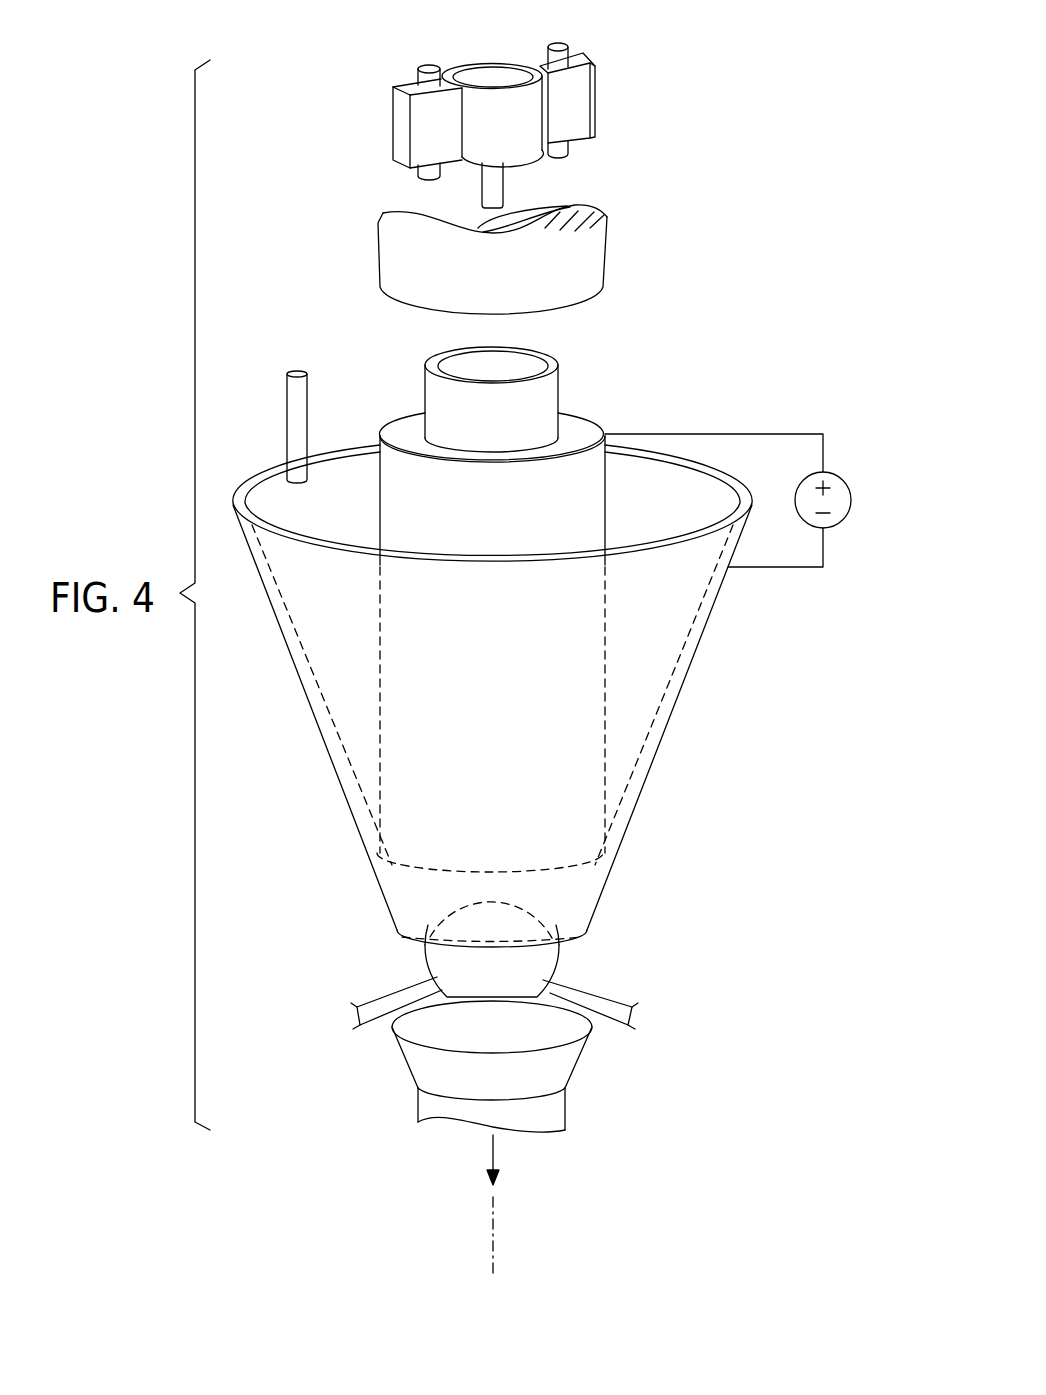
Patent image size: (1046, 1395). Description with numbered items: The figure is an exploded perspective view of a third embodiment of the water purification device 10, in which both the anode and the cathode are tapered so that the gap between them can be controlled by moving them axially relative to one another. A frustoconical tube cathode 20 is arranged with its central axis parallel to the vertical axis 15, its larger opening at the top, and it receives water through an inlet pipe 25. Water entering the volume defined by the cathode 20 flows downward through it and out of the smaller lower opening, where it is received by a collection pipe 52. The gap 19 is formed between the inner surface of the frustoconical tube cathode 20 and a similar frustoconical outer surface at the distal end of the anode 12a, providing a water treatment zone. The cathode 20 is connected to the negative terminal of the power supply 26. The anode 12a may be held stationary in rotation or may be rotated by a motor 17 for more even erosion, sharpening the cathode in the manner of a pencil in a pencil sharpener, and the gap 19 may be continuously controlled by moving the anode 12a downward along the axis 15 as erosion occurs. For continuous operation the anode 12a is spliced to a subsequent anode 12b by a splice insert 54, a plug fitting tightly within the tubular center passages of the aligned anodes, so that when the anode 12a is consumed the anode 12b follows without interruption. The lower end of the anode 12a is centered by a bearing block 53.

The water purification device 10 is at (722, 277).
The anode 12a is at (582, 413).
The subsequent anode 12b is at (602, 258).
The axis 15 is at (493, 1237).
The motor 17 is at (492, 77).
The gap 19 is at (387, 872).
The frustoconical tube cathode 20 is at (680, 695).
The inlet pipe 25 is at (297, 432).
The power supply 26 is at (837, 480).
The collection pipe 52 is at (550, 1068).
The bearing block 53 is at (532, 967).
The splice insert 54 is at (552, 357).